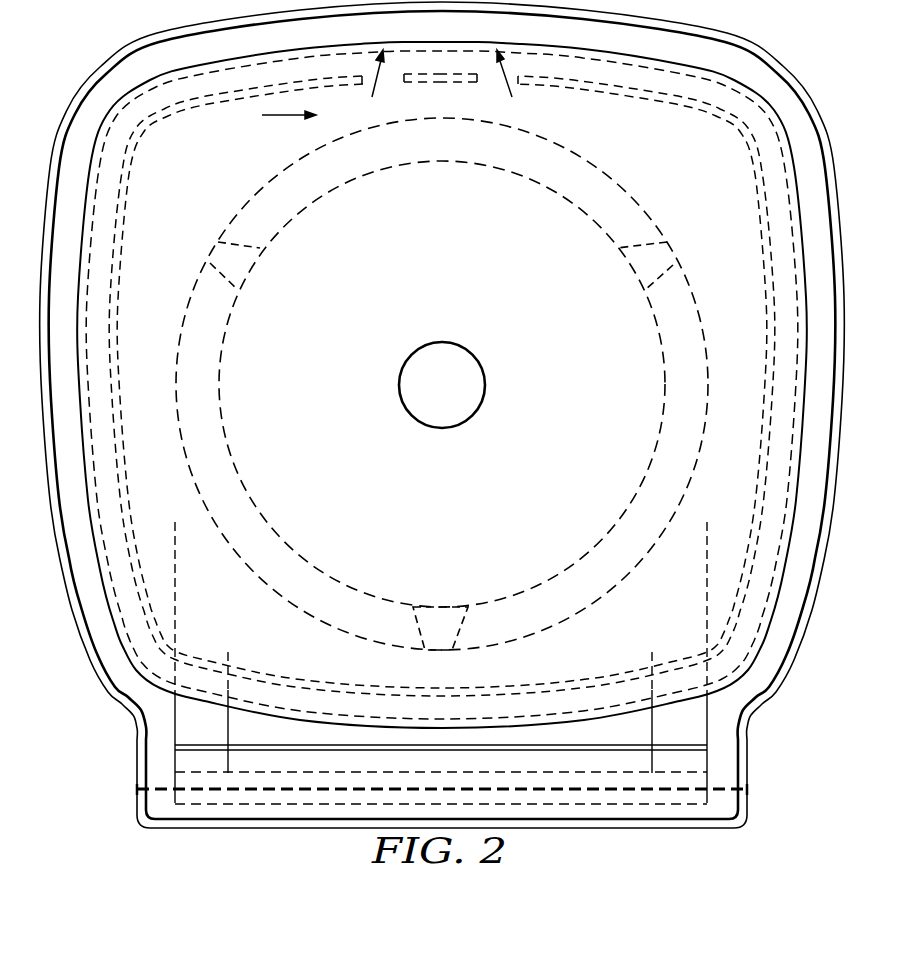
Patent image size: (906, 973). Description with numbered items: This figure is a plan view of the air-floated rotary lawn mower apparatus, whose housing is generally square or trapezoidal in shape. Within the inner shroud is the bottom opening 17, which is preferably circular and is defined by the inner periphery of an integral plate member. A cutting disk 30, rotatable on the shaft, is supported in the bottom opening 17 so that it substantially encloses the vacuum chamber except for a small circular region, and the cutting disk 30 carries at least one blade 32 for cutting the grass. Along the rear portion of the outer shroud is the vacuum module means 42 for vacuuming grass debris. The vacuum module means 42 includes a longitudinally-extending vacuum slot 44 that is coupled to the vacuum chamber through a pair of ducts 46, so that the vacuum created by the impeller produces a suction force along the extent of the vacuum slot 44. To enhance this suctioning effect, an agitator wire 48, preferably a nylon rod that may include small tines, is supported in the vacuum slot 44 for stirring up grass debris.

The bottom opening 17 is at (684, 358).
The cutting disk 30 is at (598, 187).
The blade 32 is at (658, 227).
The vacuum module means 42 is at (773, 768).
The vacuum slot 44 is at (610, 806).
The ducts 46 is at (183, 727).
The agitator wire 48 is at (724, 792).